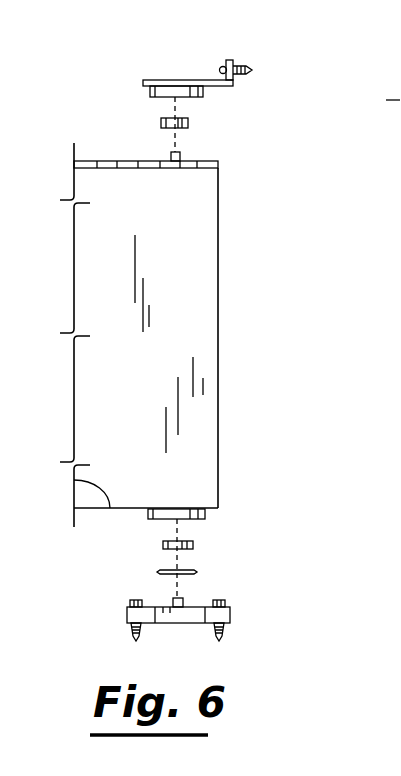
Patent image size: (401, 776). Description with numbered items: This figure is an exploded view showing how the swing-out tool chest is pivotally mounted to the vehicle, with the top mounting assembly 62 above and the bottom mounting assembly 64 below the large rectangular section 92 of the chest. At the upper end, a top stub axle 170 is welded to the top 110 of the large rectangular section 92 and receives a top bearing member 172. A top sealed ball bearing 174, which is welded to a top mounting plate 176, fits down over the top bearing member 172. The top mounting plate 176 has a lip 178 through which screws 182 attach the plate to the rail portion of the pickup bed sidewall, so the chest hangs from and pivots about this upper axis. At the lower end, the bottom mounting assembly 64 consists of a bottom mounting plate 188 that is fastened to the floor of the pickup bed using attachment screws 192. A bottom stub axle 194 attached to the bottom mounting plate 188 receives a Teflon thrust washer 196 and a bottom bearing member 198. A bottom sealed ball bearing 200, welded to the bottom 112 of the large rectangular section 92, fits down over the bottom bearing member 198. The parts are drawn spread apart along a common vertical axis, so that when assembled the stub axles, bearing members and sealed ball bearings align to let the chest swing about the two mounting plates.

The top mounting assembly 62 is at (195, 86).
The bottom mounting assembly 64 is at (213, 578).
The large rectangular section 92 is at (240, 257).
The top 110 is at (183, 163).
The bottom 112 is at (74, 480).
The top stub axle 170 is at (182, 157).
The top bearing member 172 is at (161, 123).
The top sealed ball bearing 174 is at (152, 94).
The top mounting plate 176 is at (145, 79).
The lip 178 is at (234, 84).
The screws 182 is at (219, 68).
The bottom mounting plate 188 is at (230, 615).
The attachment screws 192 is at (217, 641).
The bottom stub axle 194 is at (179, 598).
The Teflon thrust washer 196 is at (200, 573).
The bottom bearing member 198 is at (163, 545).
The bottom sealed ball bearing 200 is at (208, 512).